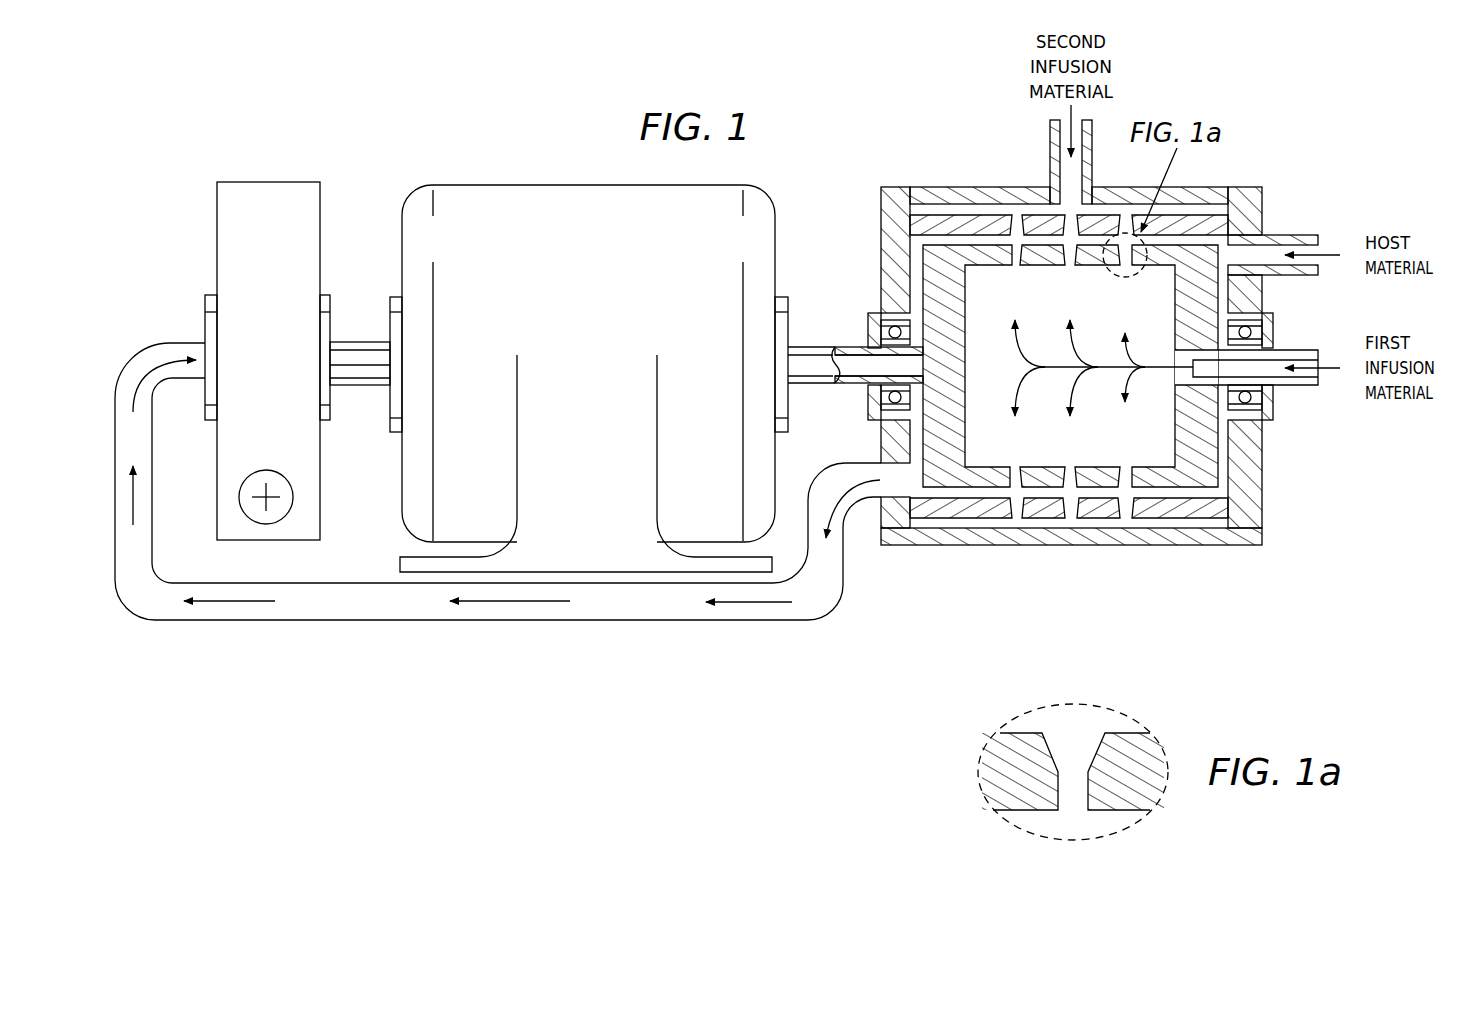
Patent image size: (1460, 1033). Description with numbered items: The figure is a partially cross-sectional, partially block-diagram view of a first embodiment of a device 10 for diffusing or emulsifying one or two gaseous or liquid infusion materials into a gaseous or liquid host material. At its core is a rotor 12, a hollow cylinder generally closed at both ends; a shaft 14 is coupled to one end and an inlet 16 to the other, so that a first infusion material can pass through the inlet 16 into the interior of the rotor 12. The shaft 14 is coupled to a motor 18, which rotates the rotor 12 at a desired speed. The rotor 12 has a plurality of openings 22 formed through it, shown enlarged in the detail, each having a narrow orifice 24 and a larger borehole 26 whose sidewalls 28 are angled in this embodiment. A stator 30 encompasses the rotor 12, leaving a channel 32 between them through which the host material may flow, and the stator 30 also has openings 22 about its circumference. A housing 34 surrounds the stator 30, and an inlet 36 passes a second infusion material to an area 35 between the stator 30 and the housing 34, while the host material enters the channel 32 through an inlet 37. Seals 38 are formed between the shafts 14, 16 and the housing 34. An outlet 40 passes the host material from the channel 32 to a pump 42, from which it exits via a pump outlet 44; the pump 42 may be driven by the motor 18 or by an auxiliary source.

In FIG. 1, the device 10 is at (593, 152).
In FIG. 1, the rotor 12 is at (956, 283).
In FIG. 1, the shaft 14 is at (808, 388).
In FIG. 1, the inlet 16 is at (1296, 348).
In FIG. 1, the motor 18 is at (500, 185).
In FIG. 1, the openings 22 is at (1018, 468).
In FIG. 1a, the openings 22 is at (1060, 676).
In FIG. 1a, the narrow orifice 24 is at (1076, 812).
In FIG. 1a, the larger borehole 26 is at (1076, 730).
In FIG. 1a, the sidewalls 28 is at (1046, 735).
In FIG. 1, the stator 30 is at (958, 508).
In FIG. 1, the channel 32 is at (907, 243).
In FIG. 1, the housing 34 is at (895, 195).
In FIG. 1, the area 35 is at (1212, 212).
In FIG. 1, the inlet 36 is at (1052, 150).
In FIG. 1, the inlet 37 is at (1298, 234).
In FIG. 1, the seals 38 is at (862, 318).
In FIG. 1, the outlet 40 is at (282, 620).
In FIG. 1, the pump 42 is at (262, 182).
In FIG. 1, the pump outlet 44 is at (266, 470).